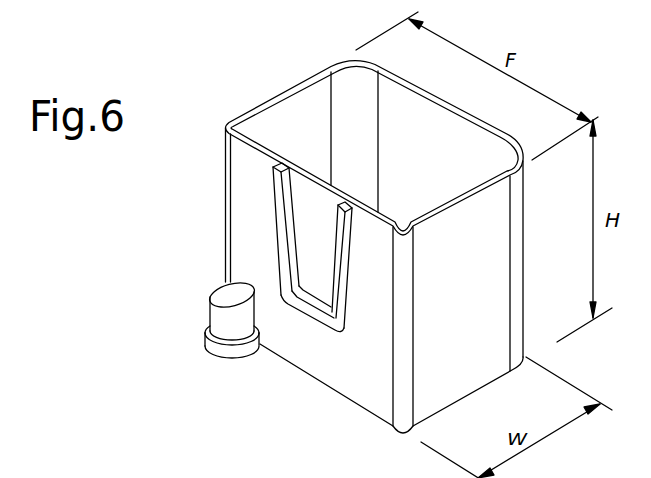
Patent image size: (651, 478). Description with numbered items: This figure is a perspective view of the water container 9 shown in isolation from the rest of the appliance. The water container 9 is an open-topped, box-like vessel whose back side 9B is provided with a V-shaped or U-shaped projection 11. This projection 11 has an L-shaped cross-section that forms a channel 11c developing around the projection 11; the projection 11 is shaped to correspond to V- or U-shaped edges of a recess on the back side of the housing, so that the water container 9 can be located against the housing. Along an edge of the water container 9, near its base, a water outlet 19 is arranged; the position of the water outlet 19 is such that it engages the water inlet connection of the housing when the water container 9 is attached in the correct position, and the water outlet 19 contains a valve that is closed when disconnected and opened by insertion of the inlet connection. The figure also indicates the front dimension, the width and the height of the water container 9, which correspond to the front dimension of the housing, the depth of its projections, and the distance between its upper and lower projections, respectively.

The water container 9 is at (291, 86).
The back side of the water container 9B is at (327, 355).
The V-shaped projection 11 is at (299, 247).
The channel 11c is at (350, 258).
The water outlet 19 is at (223, 313).